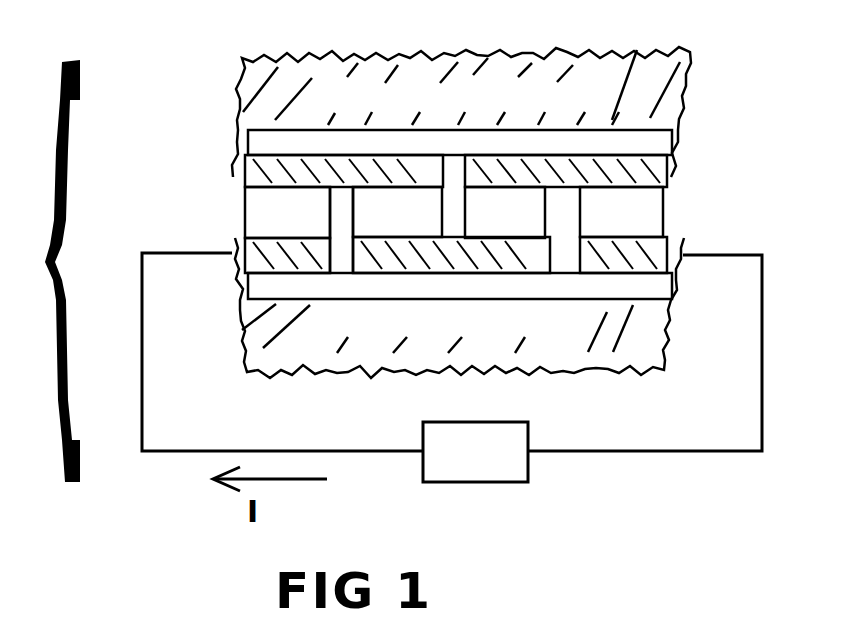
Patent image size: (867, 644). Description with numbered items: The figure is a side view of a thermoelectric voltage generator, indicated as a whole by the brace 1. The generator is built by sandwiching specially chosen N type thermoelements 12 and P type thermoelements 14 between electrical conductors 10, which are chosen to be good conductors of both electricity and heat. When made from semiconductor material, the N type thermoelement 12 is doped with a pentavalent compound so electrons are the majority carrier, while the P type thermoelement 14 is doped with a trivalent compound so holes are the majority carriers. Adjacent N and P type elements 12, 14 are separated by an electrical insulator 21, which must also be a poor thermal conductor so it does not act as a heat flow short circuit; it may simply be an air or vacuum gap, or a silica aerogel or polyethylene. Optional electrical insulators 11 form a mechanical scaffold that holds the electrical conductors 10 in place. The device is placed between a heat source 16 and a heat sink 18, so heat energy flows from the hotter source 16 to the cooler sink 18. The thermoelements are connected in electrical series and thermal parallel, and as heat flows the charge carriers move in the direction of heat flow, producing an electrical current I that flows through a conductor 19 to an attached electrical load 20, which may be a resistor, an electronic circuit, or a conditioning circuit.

The thermoelectric device 1 is at (43, 271).
The electrical conductor 10 is at (507, 214).
The electrical insulator 11 is at (650, 143).
The N type thermoelement 12 is at (250, 211).
The P type thermoelement 14 is at (650, 210).
The heat source 16 is at (665, 92).
The heat sink 18 is at (630, 333).
The conductor 19 is at (767, 337).
The electrical load 20 is at (535, 487).
The electrical insulator 21 is at (342, 209).